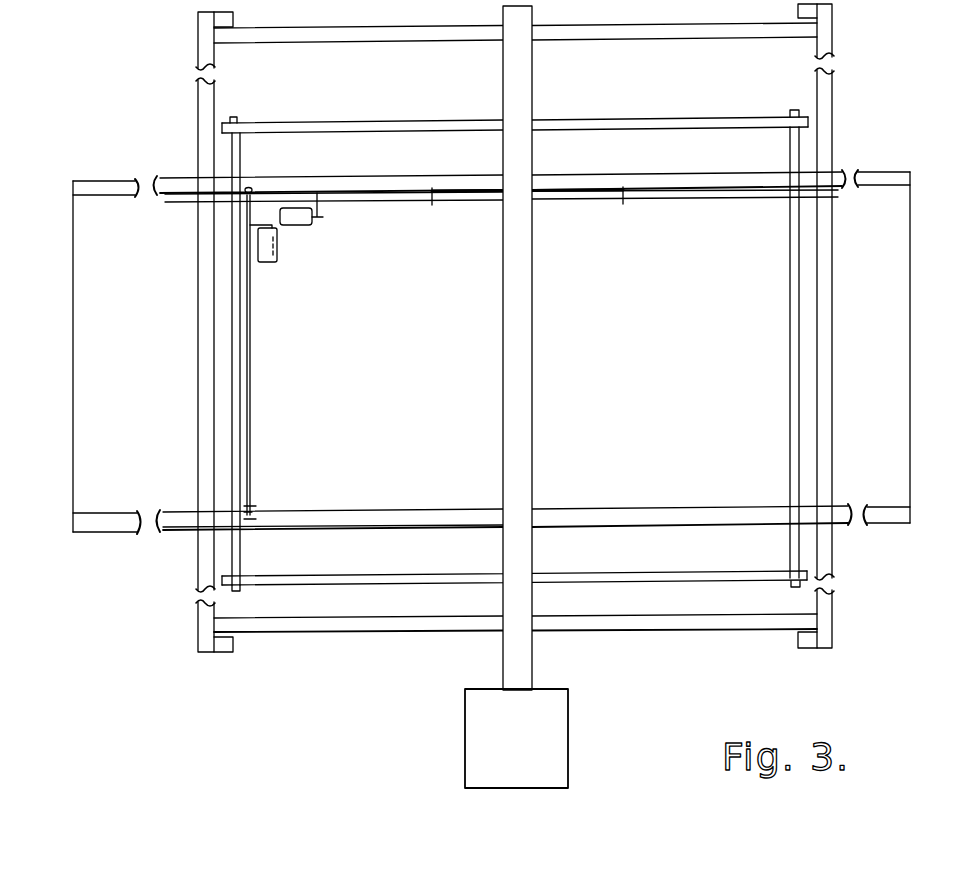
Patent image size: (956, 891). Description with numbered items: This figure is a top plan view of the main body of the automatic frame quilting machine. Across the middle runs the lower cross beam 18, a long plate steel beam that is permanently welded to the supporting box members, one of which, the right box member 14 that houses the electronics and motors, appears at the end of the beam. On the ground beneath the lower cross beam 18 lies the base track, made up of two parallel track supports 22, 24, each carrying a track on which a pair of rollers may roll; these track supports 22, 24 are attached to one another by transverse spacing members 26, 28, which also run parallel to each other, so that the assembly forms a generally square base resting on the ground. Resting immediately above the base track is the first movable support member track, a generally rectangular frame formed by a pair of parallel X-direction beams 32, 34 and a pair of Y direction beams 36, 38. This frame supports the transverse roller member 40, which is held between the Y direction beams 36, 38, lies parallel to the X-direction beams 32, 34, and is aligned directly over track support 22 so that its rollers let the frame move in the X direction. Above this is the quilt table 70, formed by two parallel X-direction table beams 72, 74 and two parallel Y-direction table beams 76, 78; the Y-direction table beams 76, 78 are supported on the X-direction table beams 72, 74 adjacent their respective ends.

The right box member 14 is at (523, 743).
The lower cross beam 18 is at (522, 433).
The track support 22 is at (207, 312).
The track support 24 is at (832, 348).
The transverse spacing member 26 is at (758, 625).
The transverse spacing member 28 is at (655, 28).
The X-direction beam 32 is at (75, 437).
The X-direction beam 34 is at (908, 420).
The Y direction beam 36 is at (655, 177).
The Y direction beam 38 is at (677, 518).
The transverse roller member 40 is at (249, 490).
The quilt table 70 is at (380, 590).
The X-direction table beam 72 is at (236, 423).
The X-direction table beam 74 is at (797, 497).
The Y-direction table beam 76 is at (609, 119).
The Y-direction table beam 78 is at (633, 582).